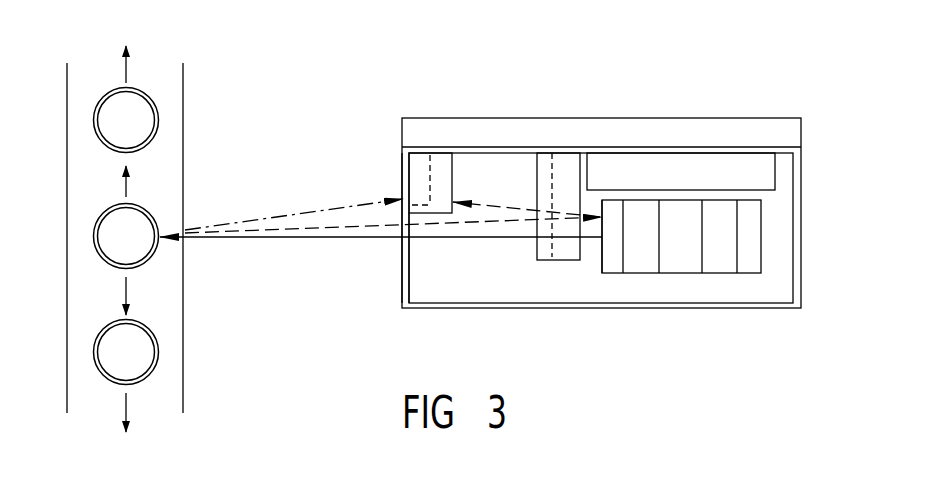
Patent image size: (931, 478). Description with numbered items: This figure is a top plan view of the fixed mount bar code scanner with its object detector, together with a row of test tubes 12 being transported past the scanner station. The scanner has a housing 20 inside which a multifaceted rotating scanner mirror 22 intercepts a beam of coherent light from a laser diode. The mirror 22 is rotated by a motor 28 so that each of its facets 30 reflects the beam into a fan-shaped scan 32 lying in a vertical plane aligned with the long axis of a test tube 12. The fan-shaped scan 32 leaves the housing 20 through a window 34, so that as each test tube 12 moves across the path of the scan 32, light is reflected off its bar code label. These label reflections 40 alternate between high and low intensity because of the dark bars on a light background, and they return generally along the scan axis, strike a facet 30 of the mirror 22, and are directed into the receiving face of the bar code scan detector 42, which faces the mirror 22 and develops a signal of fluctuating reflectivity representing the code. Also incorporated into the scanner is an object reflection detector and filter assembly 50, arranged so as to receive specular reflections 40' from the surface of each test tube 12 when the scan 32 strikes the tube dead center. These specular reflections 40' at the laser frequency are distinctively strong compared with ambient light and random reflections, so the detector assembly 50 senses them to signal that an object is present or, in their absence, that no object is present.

The test tube 12 is at (161, 120).
The housing 20 is at (575, 118).
The multifaceted rotating scanner mirror 22 is at (708, 267).
The motor 28 is at (632, 168).
The facet 30 is at (600, 245).
The fan-shaped scan 32 is at (389, 242).
The window 34 is at (398, 187).
The reflections off of the label 40 is at (381, 226).
The reflections off the object 40' is at (294, 198).
The bar code scan detector 42 is at (446, 178).
The object reflection detector and filter assembly 50 is at (417, 170).